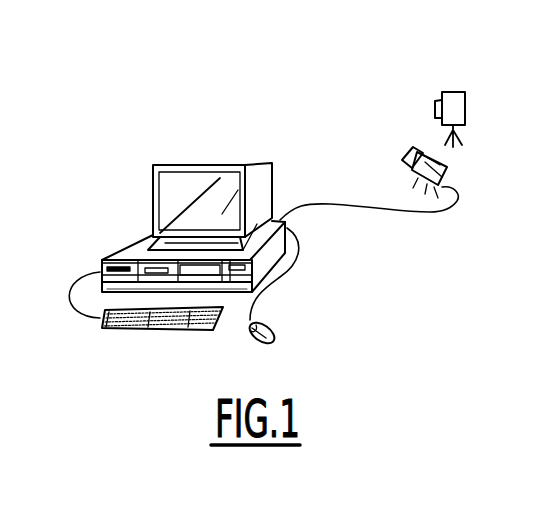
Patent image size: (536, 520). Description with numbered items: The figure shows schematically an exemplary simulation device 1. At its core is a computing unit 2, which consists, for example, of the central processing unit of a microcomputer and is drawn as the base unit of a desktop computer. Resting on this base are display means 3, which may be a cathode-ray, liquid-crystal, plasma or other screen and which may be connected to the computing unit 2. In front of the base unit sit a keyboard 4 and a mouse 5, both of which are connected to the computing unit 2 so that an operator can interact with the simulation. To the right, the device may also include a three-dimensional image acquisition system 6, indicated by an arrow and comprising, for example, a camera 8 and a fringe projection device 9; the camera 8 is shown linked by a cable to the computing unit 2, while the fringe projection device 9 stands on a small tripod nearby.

The simulation device 1 is at (102, 137).
The computing unit 2 is at (137, 250).
The display means 3 is at (203, 180).
The keyboard 4 is at (103, 327).
The mouse 5 is at (277, 327).
The 3D image acquisition system 6 is at (382, 107).
The camera 8 is at (448, 170).
The fringe projection device 9 is at (463, 103).